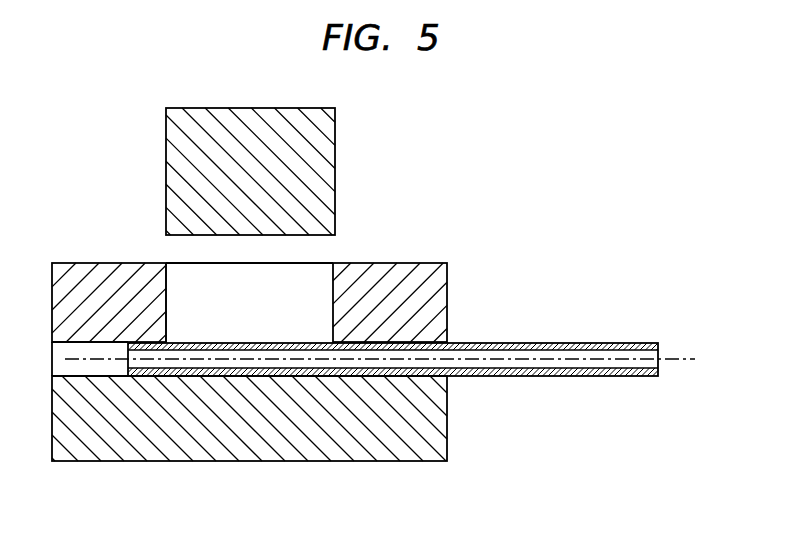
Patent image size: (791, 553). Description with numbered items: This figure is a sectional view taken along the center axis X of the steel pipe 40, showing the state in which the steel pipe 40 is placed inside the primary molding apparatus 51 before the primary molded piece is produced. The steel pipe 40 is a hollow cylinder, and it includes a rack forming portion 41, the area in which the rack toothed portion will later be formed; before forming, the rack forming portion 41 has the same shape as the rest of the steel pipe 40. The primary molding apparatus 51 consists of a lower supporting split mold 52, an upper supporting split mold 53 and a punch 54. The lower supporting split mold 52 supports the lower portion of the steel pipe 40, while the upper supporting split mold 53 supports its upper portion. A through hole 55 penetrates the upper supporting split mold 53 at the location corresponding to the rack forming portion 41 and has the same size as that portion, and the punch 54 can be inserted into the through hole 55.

The steel pipe 40 is at (592, 343).
The rack forming portion 41 is at (272, 377).
The primary molding apparatus 51 is at (433, 262).
The lower supporting split mold 52 is at (415, 452).
The upper supporting split mold 53 is at (445, 292).
The punch 54 is at (326, 142).
The through hole 55 is at (168, 277).
The center axis X is at (668, 362).